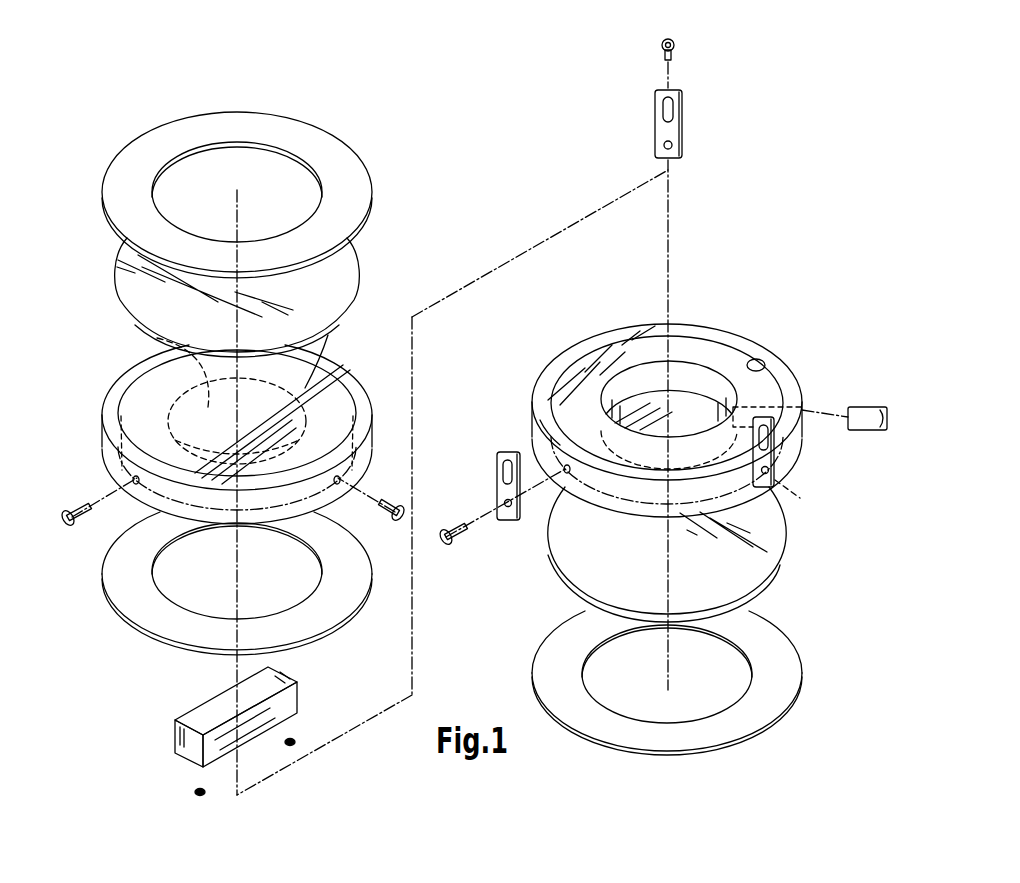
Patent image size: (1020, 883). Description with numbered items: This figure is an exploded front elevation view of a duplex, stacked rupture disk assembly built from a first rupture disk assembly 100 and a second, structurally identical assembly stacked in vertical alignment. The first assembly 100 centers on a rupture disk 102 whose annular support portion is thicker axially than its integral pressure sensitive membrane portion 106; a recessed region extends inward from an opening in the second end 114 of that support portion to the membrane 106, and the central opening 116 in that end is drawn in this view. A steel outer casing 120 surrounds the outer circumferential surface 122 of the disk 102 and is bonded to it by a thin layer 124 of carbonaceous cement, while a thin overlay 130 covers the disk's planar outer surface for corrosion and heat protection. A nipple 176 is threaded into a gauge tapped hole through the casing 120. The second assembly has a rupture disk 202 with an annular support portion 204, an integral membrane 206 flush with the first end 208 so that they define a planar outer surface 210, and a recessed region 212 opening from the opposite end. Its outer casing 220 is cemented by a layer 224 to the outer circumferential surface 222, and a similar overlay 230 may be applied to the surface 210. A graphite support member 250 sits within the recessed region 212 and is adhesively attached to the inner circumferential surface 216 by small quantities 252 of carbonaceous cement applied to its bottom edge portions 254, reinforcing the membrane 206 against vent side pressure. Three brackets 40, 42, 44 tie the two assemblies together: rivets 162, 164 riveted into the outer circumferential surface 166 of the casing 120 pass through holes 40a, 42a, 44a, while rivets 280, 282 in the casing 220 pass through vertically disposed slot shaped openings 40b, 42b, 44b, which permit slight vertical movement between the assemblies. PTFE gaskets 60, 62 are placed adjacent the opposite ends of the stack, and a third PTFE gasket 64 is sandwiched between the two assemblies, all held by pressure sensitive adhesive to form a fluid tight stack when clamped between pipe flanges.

The bracket 40 is at (483, 498).
The hole 40a is at (507, 505).
The slot shaped opening 40b is at (502, 468).
The bracket 42 is at (819, 483).
The hole 42a is at (785, 490).
The slot shaped opening 42b is at (769, 434).
The bracket 44 is at (706, 128).
The hole 44a is at (671, 150).
The slot shaped opening 44b is at (677, 108).
The PTFE gasket 60 is at (726, 728).
The PTFE gasket 62 is at (318, 148).
The third PTFE gasket 64 is at (132, 600).
The first rupture disk assembly 100 is at (824, 556).
The rupture disk 102 is at (677, 431).
The pressure sensitive membrane portion 106 is at (633, 418).
The second end 114 is at (577, 388).
The central bore 116 is at (693, 378).
The outer casing 120 is at (793, 391).
The outer circumferential surface 122 is at (777, 374).
The layer of carbonaceous cement 124 is at (765, 370).
The overlay 130 is at (583, 573).
The rivet 162 is at (460, 535).
The rivet 164 is at (769, 473).
The outer circumferential surface 166 is at (676, 46).
The nipple 176 is at (870, 412).
The rupture disk 202 is at (236, 399).
The annular support portion 204 is at (162, 380).
The pressure sensitive membrane portion 206 is at (304, 392).
The first end 208 is at (352, 470).
The planar outer surface 210 is at (264, 410).
The recessed region 212 is at (157, 338).
The inner circumferential surface 216 is at (123, 477).
The outer casing 220 is at (340, 377).
The outer circumferential surface 222 is at (345, 450).
The layer of carbonaceous cement 224 is at (308, 390).
The overlay 230 is at (335, 277).
The support member 250 is at (264, 755).
The small quantities of carbonaceous cement 252 is at (200, 797).
The bottom edge portions 254 is at (188, 760).
The rivet 280 is at (85, 524).
The rivet 282 is at (390, 502).